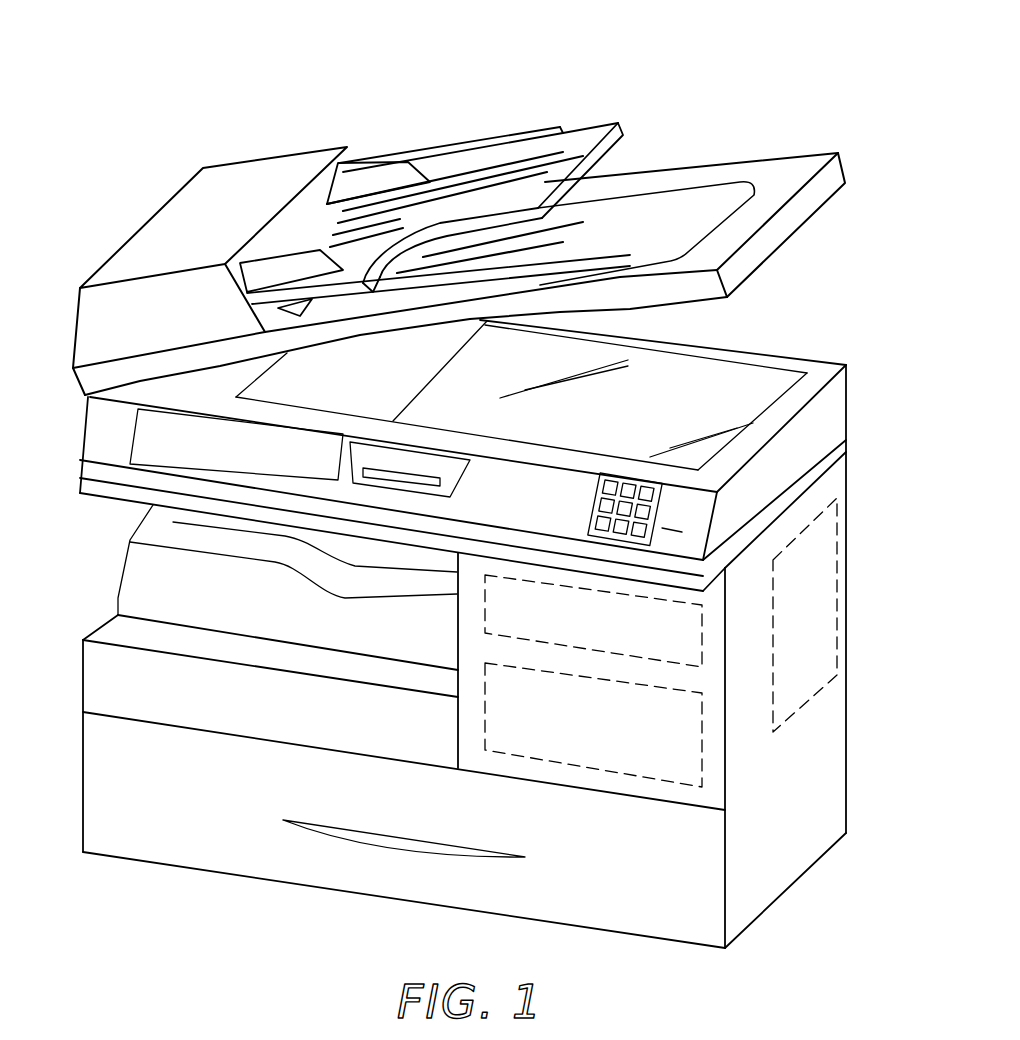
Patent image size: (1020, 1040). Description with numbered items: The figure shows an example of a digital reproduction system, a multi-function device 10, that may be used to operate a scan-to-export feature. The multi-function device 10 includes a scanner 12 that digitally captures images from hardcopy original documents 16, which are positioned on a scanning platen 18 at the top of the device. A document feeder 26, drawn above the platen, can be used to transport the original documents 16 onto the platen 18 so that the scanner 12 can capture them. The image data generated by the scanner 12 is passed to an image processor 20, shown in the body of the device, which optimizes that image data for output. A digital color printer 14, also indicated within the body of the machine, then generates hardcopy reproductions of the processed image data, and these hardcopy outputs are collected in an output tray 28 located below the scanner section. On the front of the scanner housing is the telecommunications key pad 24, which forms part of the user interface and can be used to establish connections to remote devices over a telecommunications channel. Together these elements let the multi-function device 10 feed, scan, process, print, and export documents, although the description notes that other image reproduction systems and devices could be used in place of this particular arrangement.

The multi-function device 10 is at (350, 72).
The scanner 12 is at (143, 441).
The digital color printer 14 is at (680, 716).
The hardcopy original documents 16 is at (414, 383).
The scanning platen 18 is at (727, 383).
The image processor 20 is at (840, 590).
The telecommunications key pad 24 is at (641, 512).
The document feeder 26 is at (595, 132).
The output tray 28 is at (148, 530).